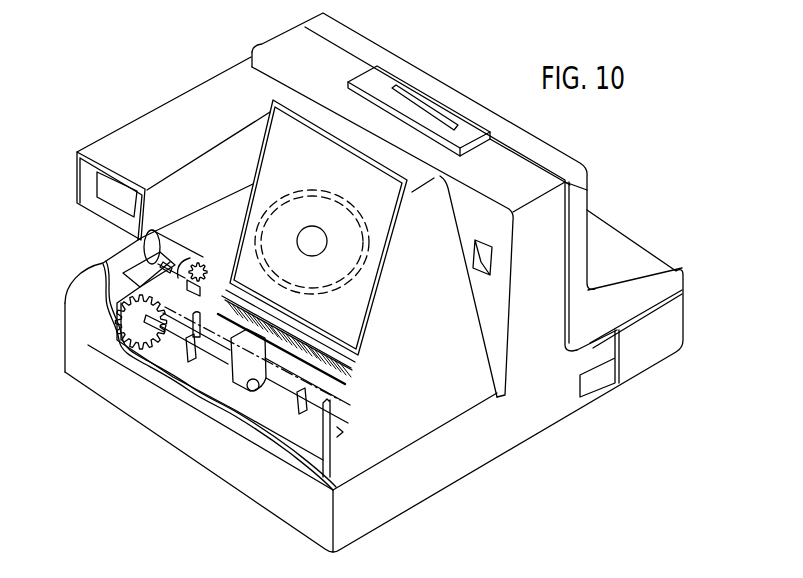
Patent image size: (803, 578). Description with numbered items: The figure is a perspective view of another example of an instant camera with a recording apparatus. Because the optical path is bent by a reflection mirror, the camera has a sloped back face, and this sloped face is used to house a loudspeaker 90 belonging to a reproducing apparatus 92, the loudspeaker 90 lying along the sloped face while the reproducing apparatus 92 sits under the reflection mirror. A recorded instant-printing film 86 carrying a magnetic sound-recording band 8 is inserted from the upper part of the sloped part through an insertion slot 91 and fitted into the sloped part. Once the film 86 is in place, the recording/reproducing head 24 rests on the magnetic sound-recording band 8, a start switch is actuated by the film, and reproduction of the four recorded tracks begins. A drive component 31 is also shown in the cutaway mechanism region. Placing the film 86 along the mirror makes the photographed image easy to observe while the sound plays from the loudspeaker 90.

The magnetic sound-recording band 8 is at (343, 362).
The recording/reproducing head 24 is at (277, 368).
The drive cylinder 31 is at (170, 248).
The instant-printing film 86 is at (373, 308).
The loudspeaker 90 is at (348, 263).
The insertion slot 91 is at (357, 353).
The reproducing apparatus 92 is at (205, 377).